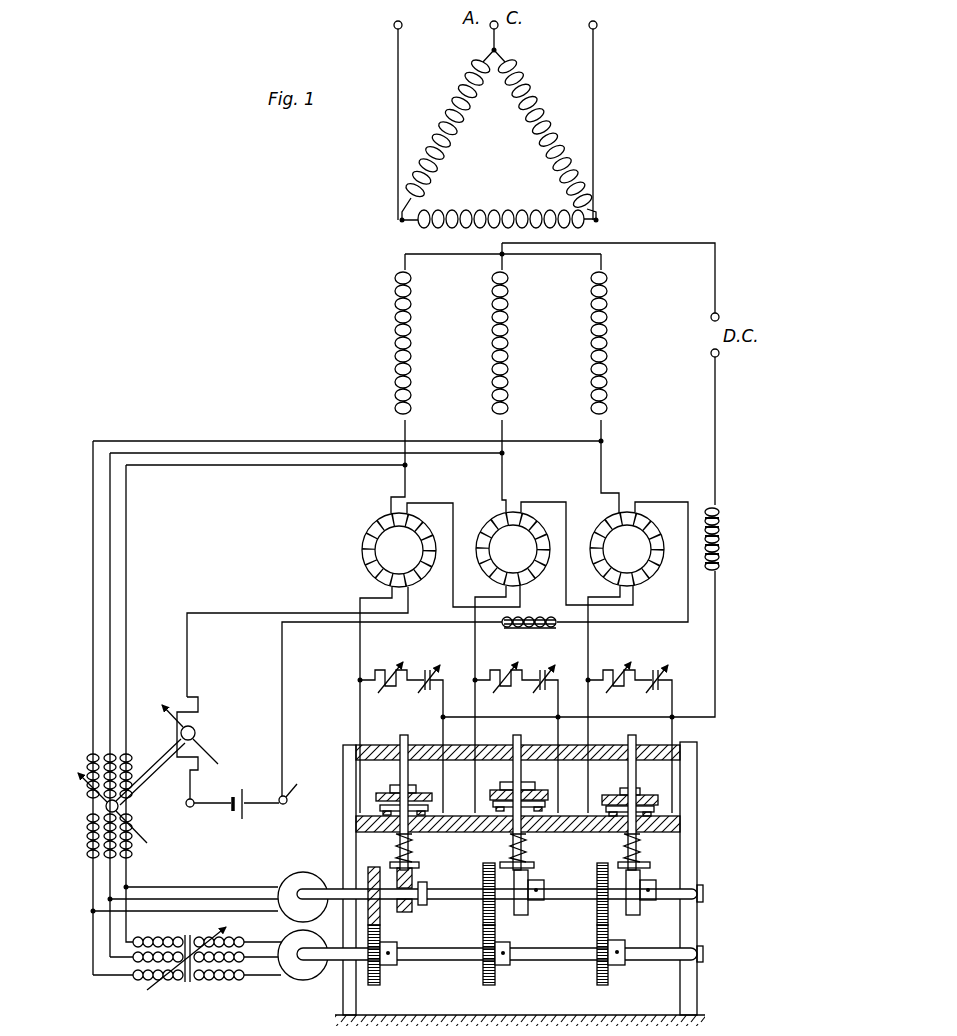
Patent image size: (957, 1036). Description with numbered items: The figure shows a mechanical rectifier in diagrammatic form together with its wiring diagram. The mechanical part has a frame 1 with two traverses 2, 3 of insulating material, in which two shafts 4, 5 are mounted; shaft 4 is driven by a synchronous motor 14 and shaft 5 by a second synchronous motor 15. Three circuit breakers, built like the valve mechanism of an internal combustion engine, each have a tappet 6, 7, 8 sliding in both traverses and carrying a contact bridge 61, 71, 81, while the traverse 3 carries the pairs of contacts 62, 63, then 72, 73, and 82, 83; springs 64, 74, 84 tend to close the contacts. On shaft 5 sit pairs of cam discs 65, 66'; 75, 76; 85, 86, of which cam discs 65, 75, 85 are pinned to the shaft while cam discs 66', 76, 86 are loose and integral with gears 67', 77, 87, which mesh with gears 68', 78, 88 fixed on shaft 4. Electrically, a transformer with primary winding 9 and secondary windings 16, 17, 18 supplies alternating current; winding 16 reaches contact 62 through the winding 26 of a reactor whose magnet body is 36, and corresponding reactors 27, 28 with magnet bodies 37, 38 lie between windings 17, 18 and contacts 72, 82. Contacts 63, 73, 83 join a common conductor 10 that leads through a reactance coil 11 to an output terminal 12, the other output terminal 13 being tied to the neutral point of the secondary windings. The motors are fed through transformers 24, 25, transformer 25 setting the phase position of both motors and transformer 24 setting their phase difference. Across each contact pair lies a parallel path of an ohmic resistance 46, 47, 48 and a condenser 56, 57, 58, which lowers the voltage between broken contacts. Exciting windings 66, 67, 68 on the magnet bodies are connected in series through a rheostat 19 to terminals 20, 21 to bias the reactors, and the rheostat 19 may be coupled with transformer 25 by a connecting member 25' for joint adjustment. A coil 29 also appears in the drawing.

The frame 1 is at (343, 811).
The traverse 2 is at (596, 748).
The traverse 3 is at (574, 826).
The shaft 4 is at (573, 962).
The shaft 5 is at (572, 897).
The tappet 6 is at (410, 776).
The tappet 7 is at (523, 776).
The tappet 8 is at (638, 776).
The primary winding 9 is at (560, 195).
The common conductor 10 is at (716, 664).
The reactance coil 11 is at (706, 570).
The output terminal 12 is at (710, 353).
The output terminal 13 is at (710, 318).
The synchronous motor 14 is at (302, 972).
The synchronous motor 15 is at (298, 874).
The secondary winding 16 is at (392, 332).
The secondary winding 17 is at (490, 332).
The secondary winding 18 is at (590, 332).
The rheostat 19 is at (196, 728).
The terminal 20 is at (190, 808).
The terminal 21 is at (299, 784).
The transformer 24 is at (182, 976).
The transformer 25 is at (94, 806).
The connecting member 25' is at (150, 772).
The reactor winding 26 is at (362, 549).
The reactor 27 is at (488, 564).
The reactor 28 is at (600, 530).
The coil 29 is at (530, 620).
The magnet body 36 is at (412, 516).
The magnet body 37 is at (514, 516).
The magnet body 38 is at (632, 516).
The ohmic resistance 46 is at (384, 668).
The ohmic resistance 47 is at (498, 668).
The ohmic resistance 48 is at (610, 668).
The condenser 56 is at (425, 668).
The condenser 57 is at (541, 668).
The condenser 58 is at (653, 668).
The contact bridge 61 is at (426, 792).
The contact 62 is at (370, 832).
The contact 63 is at (430, 808).
The spring 64 is at (412, 843).
The cam disc 65 is at (408, 906).
The exciting winding 66 is at (312, 697).
The cam disc 66' is at (423, 872).
The exciting winding 67 is at (516, 691).
The gear 67' is at (391, 896).
The exciting winding 68 is at (627, 696).
The gear 68' is at (396, 959).
The contact bridge 71 is at (548, 792).
The contact 72 is at (473, 832).
The contact 73 is at (546, 808).
The spring 74 is at (527, 850).
The cam disc 75 is at (538, 905).
The cam disc 76 is at (518, 916).
The gear 77 is at (482, 880).
The gear 78 is at (495, 978).
The contact bridge 81 is at (660, 798).
The contact 82 is at (608, 832).
The contact 83 is at (660, 818).
The spring 84 is at (640, 848).
The cam disc 85 is at (642, 900).
The cam disc 86 is at (626, 908).
The gear 87 is at (596, 874).
The gear 88 is at (609, 976).